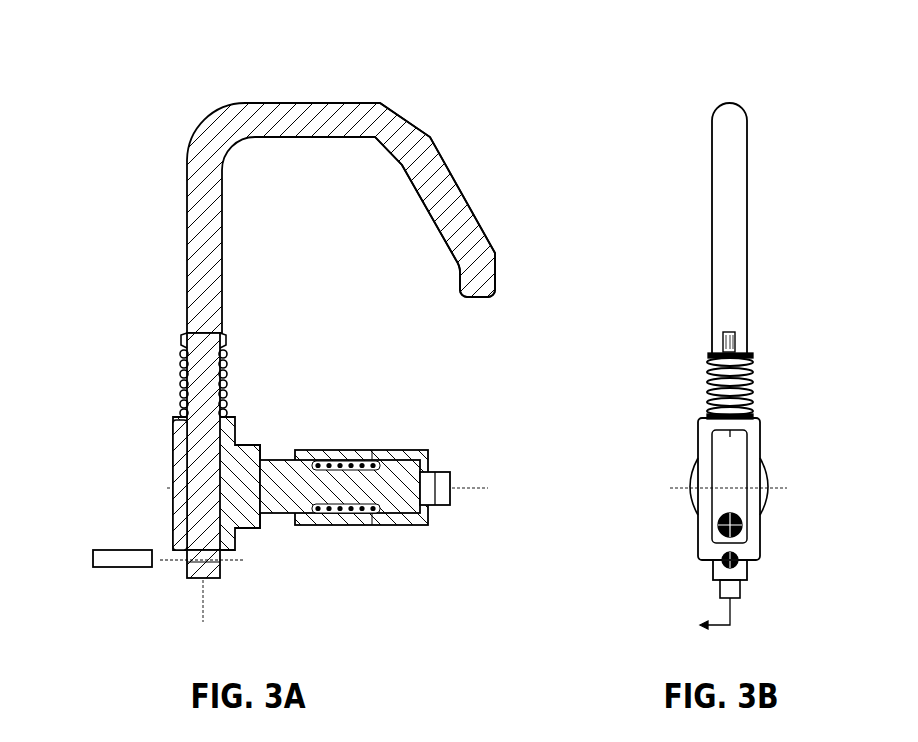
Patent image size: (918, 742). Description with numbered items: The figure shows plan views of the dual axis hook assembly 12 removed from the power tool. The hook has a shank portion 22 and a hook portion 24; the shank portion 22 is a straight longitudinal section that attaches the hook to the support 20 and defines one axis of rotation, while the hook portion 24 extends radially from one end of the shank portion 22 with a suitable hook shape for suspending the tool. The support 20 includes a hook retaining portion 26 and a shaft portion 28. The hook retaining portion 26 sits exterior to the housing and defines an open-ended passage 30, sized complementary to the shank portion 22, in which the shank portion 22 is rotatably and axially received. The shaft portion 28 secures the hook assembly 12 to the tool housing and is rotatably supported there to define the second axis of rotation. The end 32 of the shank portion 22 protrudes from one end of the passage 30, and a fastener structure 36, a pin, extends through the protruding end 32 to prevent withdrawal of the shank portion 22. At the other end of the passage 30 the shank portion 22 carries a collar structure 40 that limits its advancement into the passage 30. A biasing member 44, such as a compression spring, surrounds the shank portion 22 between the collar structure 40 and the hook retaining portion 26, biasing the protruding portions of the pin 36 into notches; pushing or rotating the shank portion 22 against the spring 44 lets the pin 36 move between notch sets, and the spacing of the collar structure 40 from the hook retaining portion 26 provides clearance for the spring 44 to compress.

In FIG. 3A, the hook assembly 12 is at (80, 83).
In FIG. 3B, the hook assembly 12 is at (650, 107).
In FIG. 3A, the support 20 is at (122, 487).
In FIG. 3B, the support 20 is at (672, 452).
In FIG. 3A, the shank portion 22 is at (296, 218).
In FIG. 3B, the shank portion 22 is at (712, 272).
In FIG. 3A, the hook portion 24 is at (430, 213).
In FIG. 3A, the hook retaining portion 26 is at (236, 428).
In FIG. 3A, the shaft portion 28 is at (270, 513).
In FIG. 3A, the passage 30 is at (176, 436).
In FIG. 3A, the end of the shank portion 32 is at (200, 580).
In FIG. 3B, the end of the shank portion 32 is at (747, 570).
In FIG. 3A, the fastener structure 36 is at (118, 568).
In FIG. 3B, the fastener structure 36 is at (716, 563).
In FIG. 3A, the collar structure 40 is at (227, 342).
In FIG. 3B, the collar structure 40 is at (710, 340).
In FIG. 3A, the biasing member 44 is at (222, 373).
In FIG. 3B, the biasing member 44 is at (707, 392).